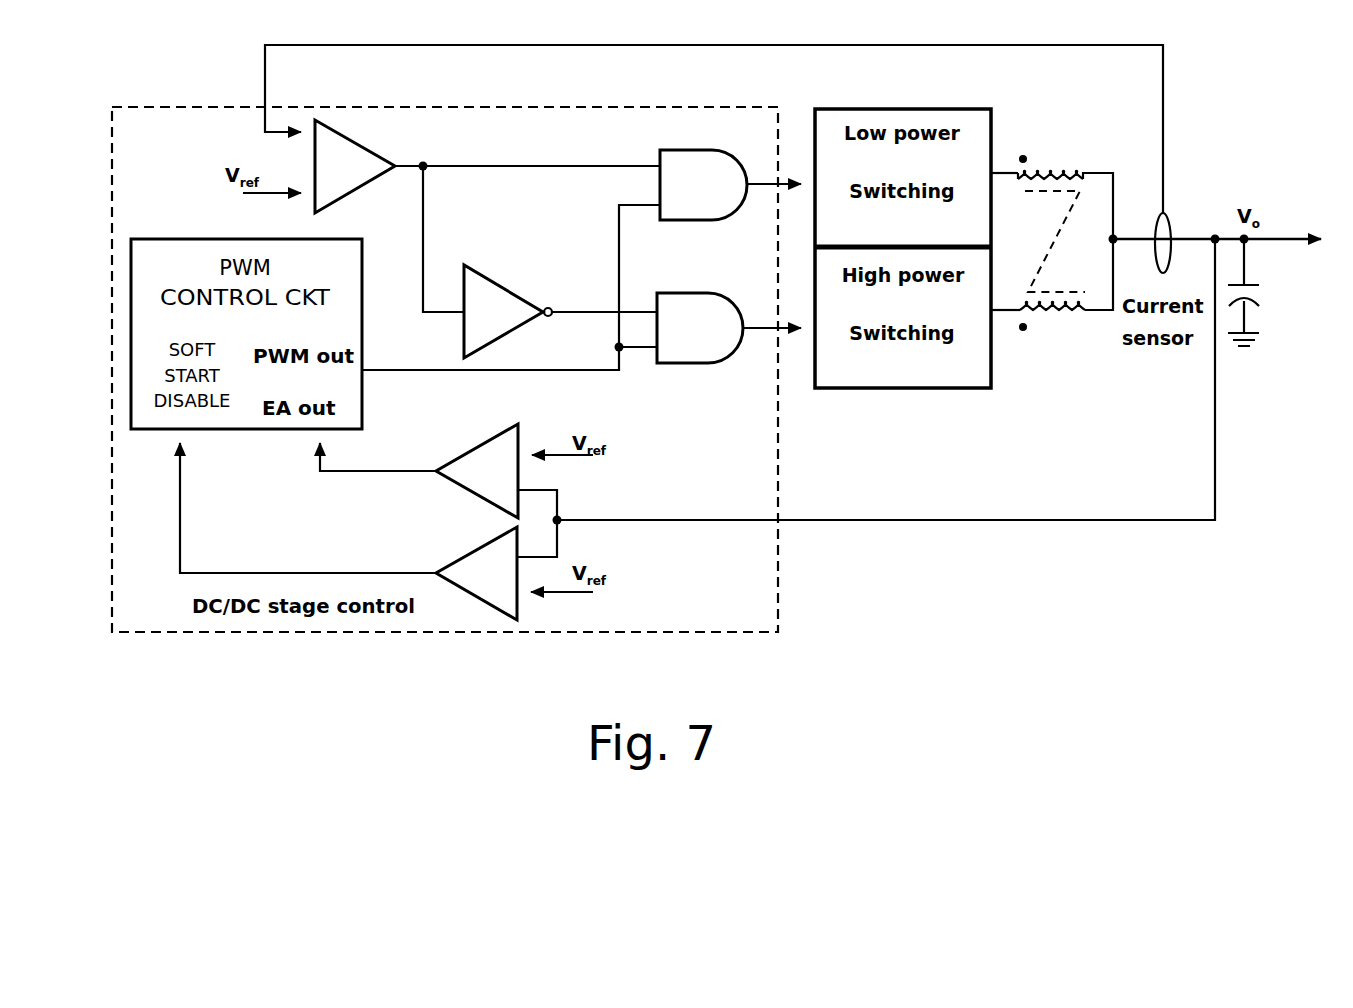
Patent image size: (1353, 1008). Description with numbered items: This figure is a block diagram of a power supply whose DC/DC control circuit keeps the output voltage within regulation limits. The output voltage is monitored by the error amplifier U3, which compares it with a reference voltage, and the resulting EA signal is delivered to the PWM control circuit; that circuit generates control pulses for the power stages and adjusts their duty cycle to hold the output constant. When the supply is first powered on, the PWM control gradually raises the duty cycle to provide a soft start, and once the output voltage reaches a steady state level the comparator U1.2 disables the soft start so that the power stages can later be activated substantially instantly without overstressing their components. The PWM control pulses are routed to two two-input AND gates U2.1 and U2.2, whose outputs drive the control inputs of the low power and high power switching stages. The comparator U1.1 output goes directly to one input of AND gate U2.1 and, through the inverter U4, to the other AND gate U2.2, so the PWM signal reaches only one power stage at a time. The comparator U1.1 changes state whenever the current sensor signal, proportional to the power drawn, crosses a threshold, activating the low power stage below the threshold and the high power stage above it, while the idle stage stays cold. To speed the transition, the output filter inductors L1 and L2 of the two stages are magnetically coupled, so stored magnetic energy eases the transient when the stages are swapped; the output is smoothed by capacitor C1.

The comparator U1.1 is at (360, 166).
The comparator U1.2 is at (457, 573).
The 2-input AND gate U2.1 is at (679, 171).
The 2-input AND gate U2.2 is at (685, 312).
The error amplifier U3 is at (467, 471).
The inverter U4 is at (508, 305).
The output filter inductor L1 is at (1052, 186).
The output filter inductor L2 is at (1052, 295).
The output capacitor C1 is at (1261, 292).